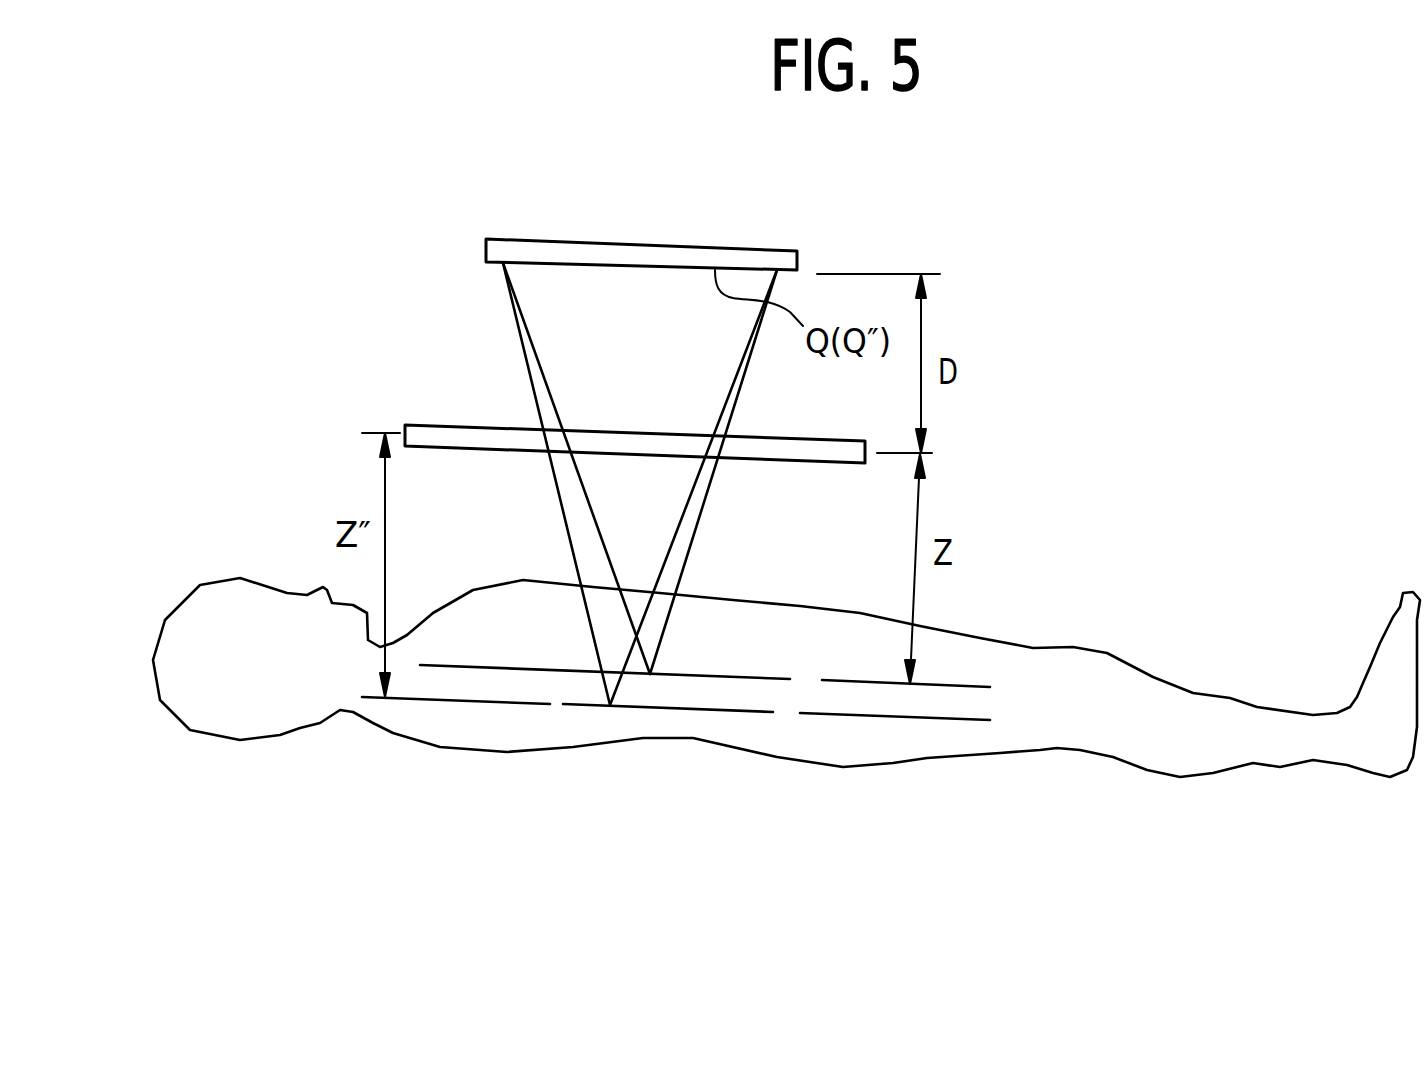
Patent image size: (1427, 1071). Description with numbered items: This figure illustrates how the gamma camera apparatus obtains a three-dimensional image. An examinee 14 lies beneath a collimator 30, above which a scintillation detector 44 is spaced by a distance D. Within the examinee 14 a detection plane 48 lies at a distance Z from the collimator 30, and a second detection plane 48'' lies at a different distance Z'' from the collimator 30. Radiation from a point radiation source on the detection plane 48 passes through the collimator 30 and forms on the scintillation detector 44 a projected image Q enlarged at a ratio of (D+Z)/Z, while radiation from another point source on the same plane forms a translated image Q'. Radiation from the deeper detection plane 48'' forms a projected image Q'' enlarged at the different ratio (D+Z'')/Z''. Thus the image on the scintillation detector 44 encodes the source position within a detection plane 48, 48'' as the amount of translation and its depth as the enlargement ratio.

The examinee 14 is at (1170, 702).
The collimator 30 is at (801, 447).
The scintillation detector 44 is at (757, 250).
The detection plane 48 is at (705, 746).
The detection plane 48'' is at (676, 777).